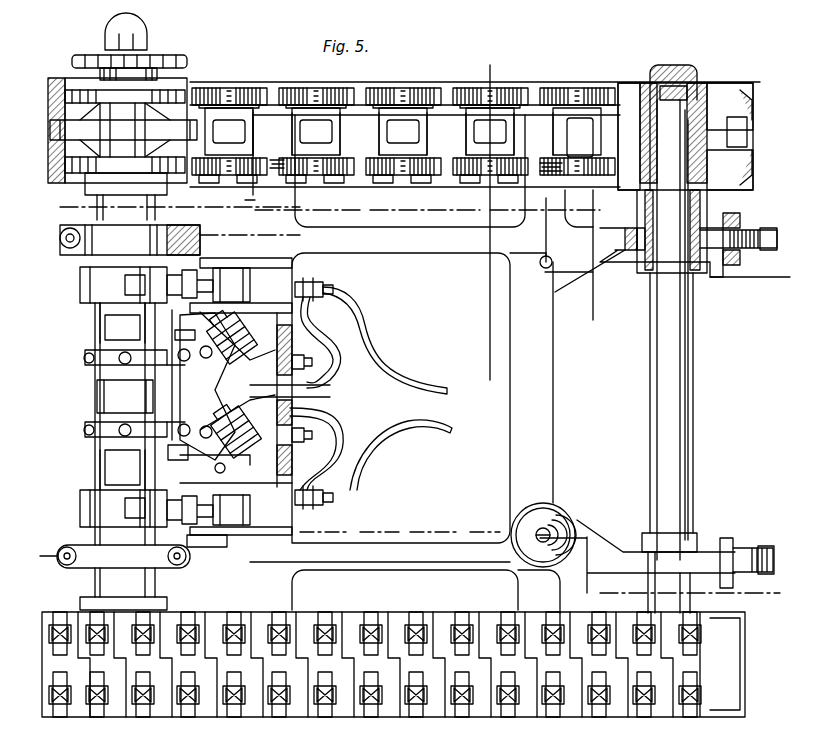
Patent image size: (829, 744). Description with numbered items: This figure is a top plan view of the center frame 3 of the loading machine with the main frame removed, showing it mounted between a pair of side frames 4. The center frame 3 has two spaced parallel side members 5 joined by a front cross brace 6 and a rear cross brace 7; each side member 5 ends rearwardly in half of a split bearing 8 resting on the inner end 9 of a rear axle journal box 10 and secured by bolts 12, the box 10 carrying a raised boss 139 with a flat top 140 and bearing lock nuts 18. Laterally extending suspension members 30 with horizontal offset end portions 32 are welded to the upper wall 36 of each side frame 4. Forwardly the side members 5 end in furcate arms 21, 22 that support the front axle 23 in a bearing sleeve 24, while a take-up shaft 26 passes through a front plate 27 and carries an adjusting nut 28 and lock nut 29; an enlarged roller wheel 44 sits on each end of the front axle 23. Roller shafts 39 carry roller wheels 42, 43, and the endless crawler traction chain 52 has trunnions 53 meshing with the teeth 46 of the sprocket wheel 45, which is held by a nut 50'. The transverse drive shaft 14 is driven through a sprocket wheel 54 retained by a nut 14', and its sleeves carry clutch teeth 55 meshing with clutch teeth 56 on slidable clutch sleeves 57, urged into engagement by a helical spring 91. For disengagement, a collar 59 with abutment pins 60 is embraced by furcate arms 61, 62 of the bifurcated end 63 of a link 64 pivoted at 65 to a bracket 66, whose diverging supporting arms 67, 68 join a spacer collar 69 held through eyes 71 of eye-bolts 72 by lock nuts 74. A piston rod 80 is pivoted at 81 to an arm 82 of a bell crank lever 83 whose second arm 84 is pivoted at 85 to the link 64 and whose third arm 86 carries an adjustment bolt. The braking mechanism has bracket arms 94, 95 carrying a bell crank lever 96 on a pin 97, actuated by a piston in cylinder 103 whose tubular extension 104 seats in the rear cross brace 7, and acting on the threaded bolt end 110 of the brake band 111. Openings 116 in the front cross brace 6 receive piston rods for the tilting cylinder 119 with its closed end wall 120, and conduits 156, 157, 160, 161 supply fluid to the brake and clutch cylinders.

The center frame 3 is at (428, 578).
The side frame 4 is at (372, 110).
The side member 5 is at (428, 253).
The front cross brace 6 is at (553, 442).
The rear cross brace 7 is at (780, 585).
The split bearing 8 is at (55, 200).
The inner end of rear axle journal box 9 is at (90, 250).
The rear axle journal box 10 is at (90, 535).
The bolt 12 is at (60, 236).
The drive shaft 14 is at (293, 372).
The nut 14' is at (112, 31).
The bearing lock nut 18 is at (95, 308).
The furcate arm 21 is at (636, 550).
The furcate arm 22 is at (636, 252).
The front axle 23 is at (690, 435).
The bearing sleeve 24 is at (648, 213).
The shaft 26 is at (778, 240).
The front plate 27 is at (735, 265).
The adjusting nut 28 is at (745, 230).
The lock nut 29 is at (758, 232).
The suspension member 30 is at (258, 200).
The offset end portion 32 is at (278, 88).
The upper wall 36 is at (392, 172).
The roller shaft 39 is at (448, 90).
The roller wheel 42 is at (345, 88).
The roller wheel 43 is at (370, 160).
The enlarged roller wheel 44 is at (752, 92).
The sprocket wheel 45 is at (130, 150).
The sprocket teeth 46 is at (60, 132).
The nut 50' is at (137, 48).
The endless crawler traction chain 52 is at (247, 88).
The trunnion 53 is at (62, 108).
The sprocket wheel 54 is at (170, 68).
The clutch teeth 55 is at (118, 312).
The clutch teeth 56 is at (105, 318).
The clutch sleeve 57 is at (100, 350).
The collar 59 is at (98, 367).
The abutment pin 60 is at (92, 360).
The furcate arm 61 is at (128, 352).
The furcate arm 62 is at (98, 395).
The bifurcated end 63 is at (175, 385).
The link 64 is at (207, 386).
The pivot connection 65 is at (178, 350).
The bracket 66 is at (175, 362).
The supporting arm 67 is at (235, 370).
The supporting arm 68 is at (217, 415).
The spacer collar 69 is at (312, 398).
The eye 71 is at (250, 350).
The eye-bolt 72 is at (300, 362).
The lock nut 74 is at (292, 458).
The piston rod 80 is at (270, 475).
The pivot connection 81 is at (240, 458).
The arm 82 is at (215, 469).
The bell crank lever 83 is at (196, 480).
The second arm 84 is at (233, 428).
The pivot connection 85 is at (194, 448).
The third arm 86 is at (169, 462).
The helical spring 91 is at (96, 390).
The bracket arm 94 is at (255, 258).
The bracket arm 95 is at (250, 305).
The bell crank lever 96 is at (228, 580).
The pin 97 is at (203, 584).
The cylinder 103 is at (235, 285).
The tubular extension 104 is at (308, 280).
The threaded bolt end 110 is at (130, 240).
The brake band 111 is at (82, 285).
The opening 116 is at (556, 272).
The cylinder 119 is at (573, 525).
The closed end wall 120 is at (552, 512).
The raised boss 139 is at (155, 200).
The top 140 is at (150, 212).
The conduit 156 is at (442, 440).
The conduit 157 is at (425, 385).
The conduit 160 is at (342, 420).
The conduit 161 is at (335, 376).